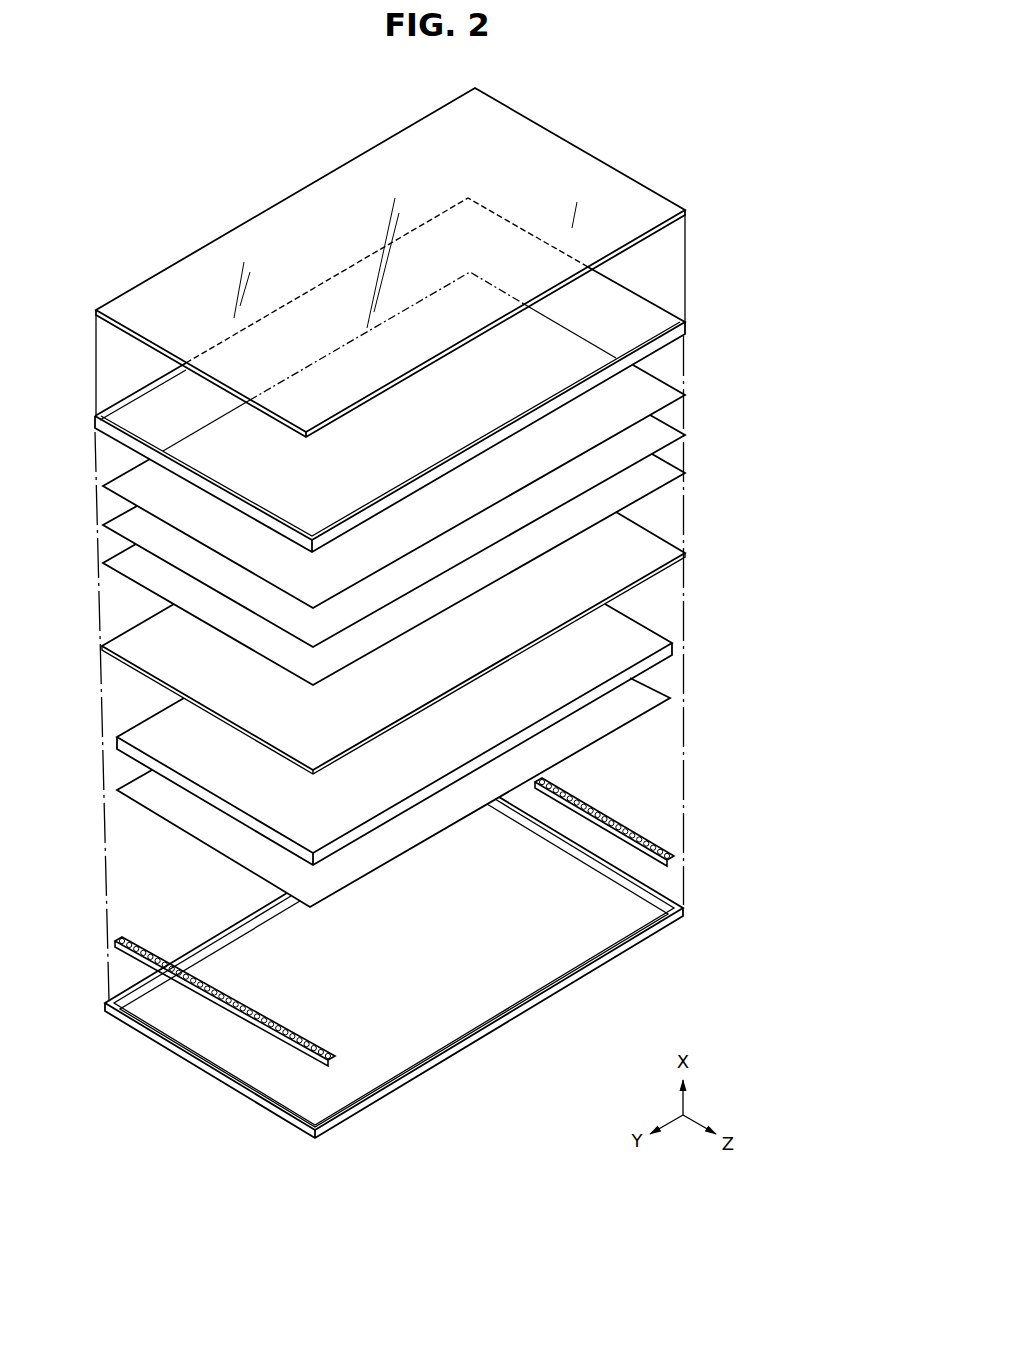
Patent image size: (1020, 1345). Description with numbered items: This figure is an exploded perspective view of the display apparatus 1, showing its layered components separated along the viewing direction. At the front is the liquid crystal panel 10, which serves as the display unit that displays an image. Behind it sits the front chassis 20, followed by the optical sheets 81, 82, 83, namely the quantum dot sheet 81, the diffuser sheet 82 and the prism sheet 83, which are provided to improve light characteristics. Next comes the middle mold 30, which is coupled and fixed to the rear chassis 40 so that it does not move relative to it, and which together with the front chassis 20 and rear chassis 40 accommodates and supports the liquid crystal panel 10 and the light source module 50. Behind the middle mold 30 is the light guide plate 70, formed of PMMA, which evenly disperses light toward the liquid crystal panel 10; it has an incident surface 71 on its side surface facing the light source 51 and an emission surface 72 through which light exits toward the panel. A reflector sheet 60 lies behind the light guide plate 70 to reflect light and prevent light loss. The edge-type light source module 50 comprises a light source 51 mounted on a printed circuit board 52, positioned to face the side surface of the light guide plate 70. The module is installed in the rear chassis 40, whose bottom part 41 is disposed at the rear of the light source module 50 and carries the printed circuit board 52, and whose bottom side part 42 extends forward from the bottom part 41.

The display apparatus 1 is at (121, 119).
The liquid crystal panel 10 is at (690, 207).
The front chassis 20 is at (689, 326).
The middle mold 30 is at (690, 555).
The rear chassis 40 is at (435, 967).
The bottom part 41 is at (424, 1022).
The bottom side part 42 is at (531, 1005).
The light source module 50 is at (448, 922).
The light source 51 is at (343, 981).
The printed circuit board 52 is at (318, 1050).
The reflector sheet 60 is at (677, 702).
The light guide plate 70 is at (435, 742).
The incident surface 71 is at (253, 818).
The emission surface 72 is at (236, 782).
The quantum dot sheet 81 is at (650, 488).
The diffuser sheet 82 is at (650, 449).
The prism sheet 83 is at (650, 409).